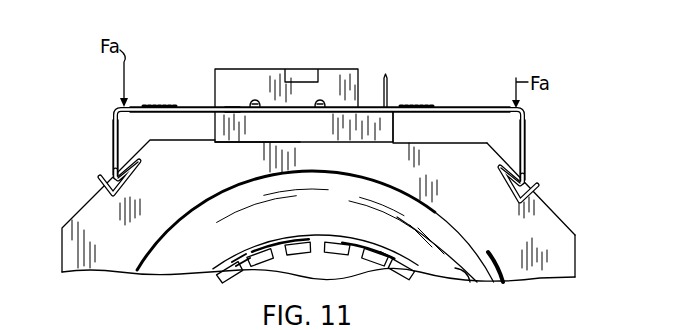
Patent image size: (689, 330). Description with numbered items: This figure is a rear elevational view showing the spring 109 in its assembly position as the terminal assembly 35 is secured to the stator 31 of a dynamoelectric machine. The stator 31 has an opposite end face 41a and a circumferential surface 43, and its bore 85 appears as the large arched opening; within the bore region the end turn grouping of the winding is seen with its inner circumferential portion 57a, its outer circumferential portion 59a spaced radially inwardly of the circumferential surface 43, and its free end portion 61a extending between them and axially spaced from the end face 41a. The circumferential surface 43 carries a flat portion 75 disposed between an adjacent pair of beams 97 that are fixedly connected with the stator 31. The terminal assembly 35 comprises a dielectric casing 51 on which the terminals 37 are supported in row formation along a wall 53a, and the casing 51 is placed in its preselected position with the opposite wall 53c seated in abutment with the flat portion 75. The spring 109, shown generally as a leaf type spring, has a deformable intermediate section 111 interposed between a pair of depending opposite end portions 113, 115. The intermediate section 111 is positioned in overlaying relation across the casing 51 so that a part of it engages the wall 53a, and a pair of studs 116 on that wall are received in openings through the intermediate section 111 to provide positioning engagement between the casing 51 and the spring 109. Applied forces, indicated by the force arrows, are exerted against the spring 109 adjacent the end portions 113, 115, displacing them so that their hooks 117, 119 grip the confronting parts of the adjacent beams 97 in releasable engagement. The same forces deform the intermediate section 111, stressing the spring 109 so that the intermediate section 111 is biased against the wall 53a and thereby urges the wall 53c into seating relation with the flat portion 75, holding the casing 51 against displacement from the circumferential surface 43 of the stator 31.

The stator 31 is at (588, 231).
The terminal assembly 35 is at (203, 67).
The terminals 37 is at (386, 73).
The opposite end face 41a is at (557, 250).
The circumferential surface 43 is at (553, 212).
The casing 51 is at (220, 125).
The wall 53a is at (232, 107).
The wall 53c is at (245, 142).
The inner circumferential portion 57a is at (367, 257).
The outer circumferential portion 59a is at (513, 277).
The free end portion 61a is at (463, 267).
The flat portion 75 is at (433, 143).
The bore 85 is at (342, 252).
The beams 97 is at (138, 190).
The spring 109 is at (488, 102).
The intermediate section 111 is at (433, 108).
The opposite end portion 113 is at (527, 135).
The opposite end portion 115 is at (112, 127).
The studs 116 is at (255, 99).
The hook 117 is at (515, 170).
The hook 119 is at (128, 158).